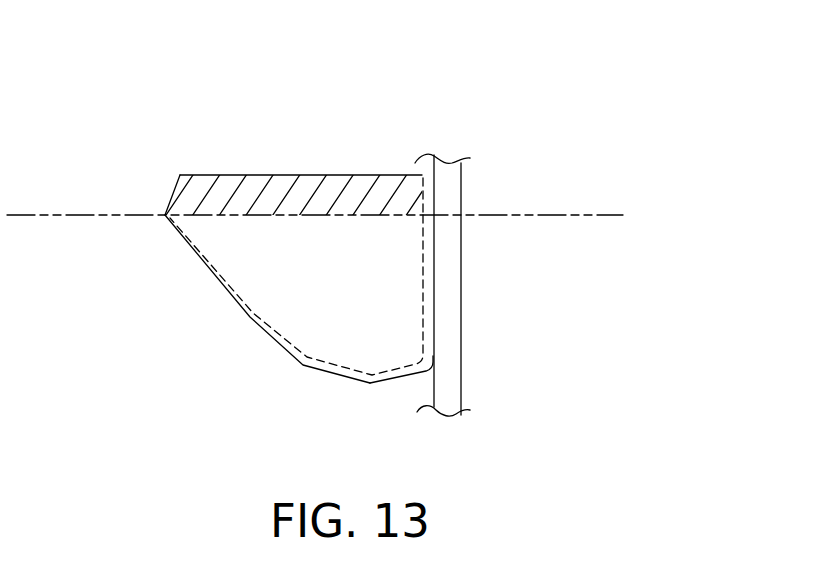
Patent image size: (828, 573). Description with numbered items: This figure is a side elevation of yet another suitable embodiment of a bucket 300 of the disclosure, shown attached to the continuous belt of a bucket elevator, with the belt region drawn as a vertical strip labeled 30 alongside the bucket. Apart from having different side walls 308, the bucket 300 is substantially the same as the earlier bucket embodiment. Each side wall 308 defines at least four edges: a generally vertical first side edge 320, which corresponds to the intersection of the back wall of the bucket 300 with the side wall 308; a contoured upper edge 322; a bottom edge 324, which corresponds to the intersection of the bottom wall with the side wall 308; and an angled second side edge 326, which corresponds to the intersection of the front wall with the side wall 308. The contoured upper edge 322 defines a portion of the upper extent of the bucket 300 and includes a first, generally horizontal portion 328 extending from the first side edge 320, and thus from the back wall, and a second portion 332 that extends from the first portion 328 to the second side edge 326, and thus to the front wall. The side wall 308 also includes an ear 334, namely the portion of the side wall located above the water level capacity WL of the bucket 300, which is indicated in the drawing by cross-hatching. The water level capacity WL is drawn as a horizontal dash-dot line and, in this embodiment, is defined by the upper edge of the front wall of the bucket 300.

The bucket 300 is at (376, 75).
The wall 30 is at (447, 277).
The side wall 308 is at (362, 313).
The first side edge 320 is at (434, 240).
The contoured upper edge 322 is at (422, 178).
The bottom edge 324 is at (390, 383).
The angled second side edge 326 is at (212, 283).
The first portion 328 is at (280, 177).
The second portion 332 is at (168, 180).
The ear 334 is at (233, 190).
The water level capacity WL is at (602, 216).